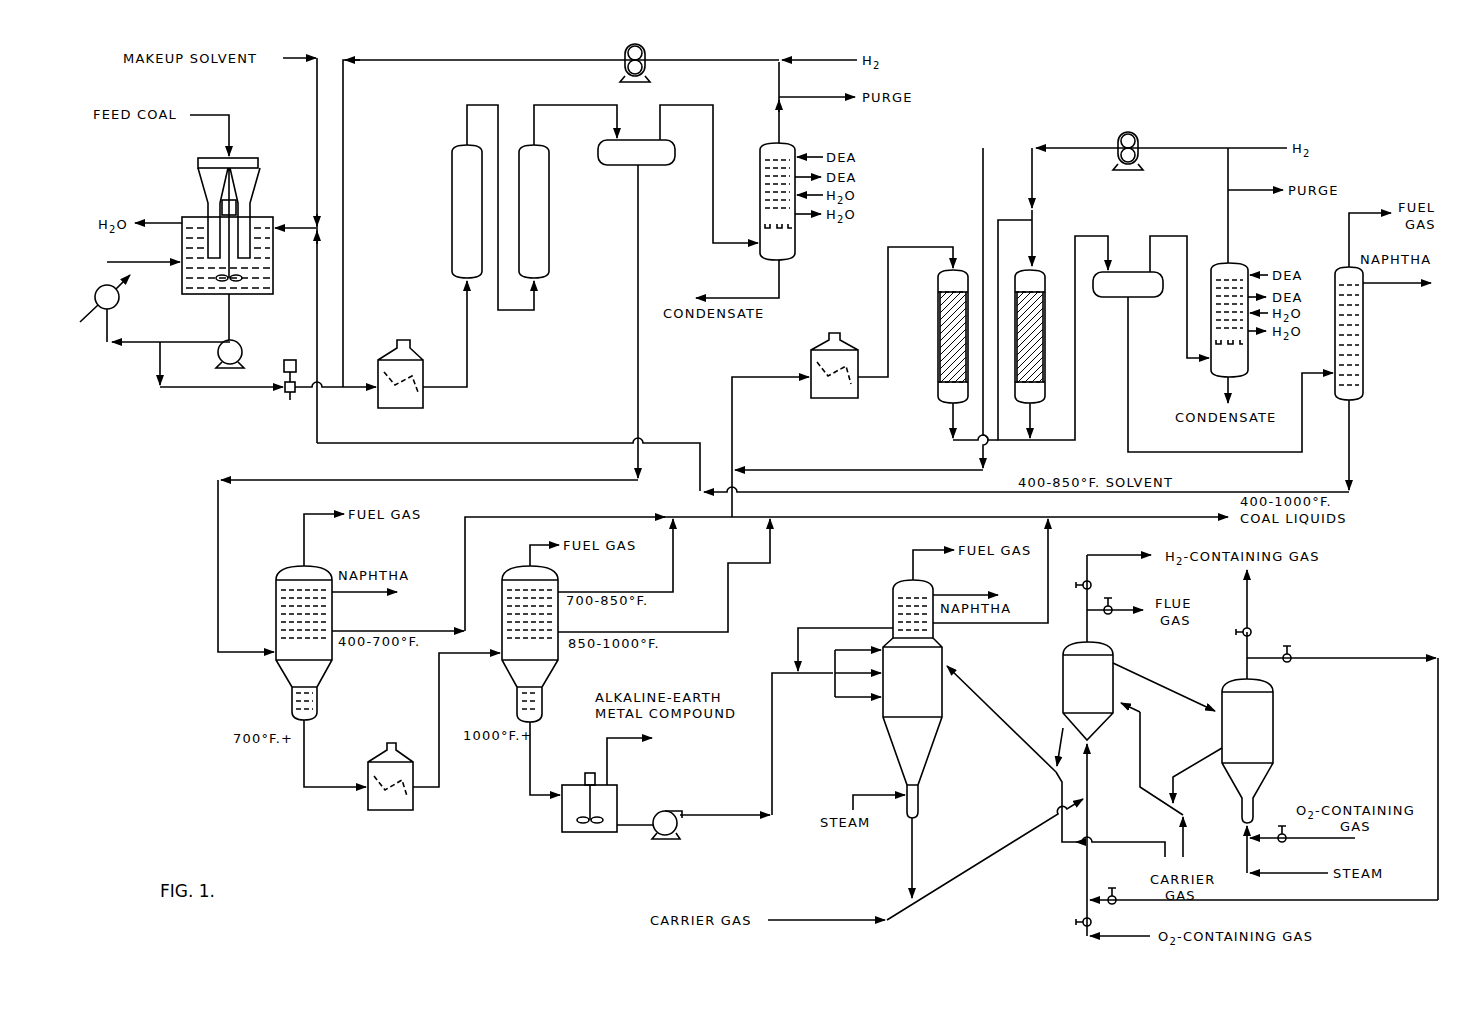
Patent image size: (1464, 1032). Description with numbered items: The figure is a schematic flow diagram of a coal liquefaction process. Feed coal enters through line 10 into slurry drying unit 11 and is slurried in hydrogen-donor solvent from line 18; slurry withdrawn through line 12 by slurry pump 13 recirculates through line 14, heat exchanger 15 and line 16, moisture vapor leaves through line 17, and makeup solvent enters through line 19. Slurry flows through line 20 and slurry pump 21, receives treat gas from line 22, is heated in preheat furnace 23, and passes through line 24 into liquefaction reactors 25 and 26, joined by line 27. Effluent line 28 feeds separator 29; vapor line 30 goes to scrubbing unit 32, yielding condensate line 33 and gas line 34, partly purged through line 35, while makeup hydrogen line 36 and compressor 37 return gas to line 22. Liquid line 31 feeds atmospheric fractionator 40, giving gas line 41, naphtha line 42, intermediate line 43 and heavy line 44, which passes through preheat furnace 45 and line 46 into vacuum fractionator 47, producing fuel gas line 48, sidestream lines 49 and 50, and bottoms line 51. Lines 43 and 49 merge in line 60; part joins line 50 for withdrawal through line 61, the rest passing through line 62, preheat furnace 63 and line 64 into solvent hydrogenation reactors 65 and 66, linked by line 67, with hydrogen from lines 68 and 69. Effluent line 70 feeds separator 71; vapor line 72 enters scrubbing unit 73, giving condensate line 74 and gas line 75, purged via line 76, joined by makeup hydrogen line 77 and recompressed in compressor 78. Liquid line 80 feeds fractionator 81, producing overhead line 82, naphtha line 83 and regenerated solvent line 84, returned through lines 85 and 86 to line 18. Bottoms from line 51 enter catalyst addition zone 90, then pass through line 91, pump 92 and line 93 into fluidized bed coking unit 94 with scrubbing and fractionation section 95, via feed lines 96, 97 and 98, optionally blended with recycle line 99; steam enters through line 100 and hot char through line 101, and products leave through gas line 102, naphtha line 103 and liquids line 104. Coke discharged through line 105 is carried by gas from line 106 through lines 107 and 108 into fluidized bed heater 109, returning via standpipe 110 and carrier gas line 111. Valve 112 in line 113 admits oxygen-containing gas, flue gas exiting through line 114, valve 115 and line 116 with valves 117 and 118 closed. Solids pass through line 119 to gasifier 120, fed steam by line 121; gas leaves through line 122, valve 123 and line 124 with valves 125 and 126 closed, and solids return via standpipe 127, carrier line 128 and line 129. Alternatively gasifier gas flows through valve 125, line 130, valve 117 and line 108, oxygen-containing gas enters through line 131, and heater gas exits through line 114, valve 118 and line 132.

The feed coal line 10 is at (229, 133).
The slurry drying unit 11 is at (256, 170).
The slurry withdrawal line 12 is at (229, 320).
The slurry pump 13 is at (236, 345).
The recycle line 14 is at (132, 345).
The heat exchanger 15 is at (119, 298).
The slurry return line 16 is at (144, 262).
The vapor withdrawal line 17 is at (162, 223).
The solvent inlet line 18 is at (304, 226).
The makeup solvent line 19 is at (314, 133).
The slurry feed line 20 is at (226, 388).
The slurry pump 21 is at (286, 400).
The treat gas line 22 is at (343, 262).
The mixed phase preheat furnace 23 is at (394, 350).
The preheated slurry line 24 is at (467, 366).
The liquefaction reactor 25 is at (460, 204).
The liquefaction reactor 26 is at (546, 205).
The interconnecting line 27 is at (488, 105).
The reactor effluent line 28 is at (578, 105).
The liquefaction reactor effluent separator 29 is at (622, 160).
The overhead vapor line 30 is at (694, 105).
The liquid line 31 is at (636, 284).
The scrubbing unit 32 is at (760, 156).
The condensate line 33 is at (768, 273).
The overhead gas line 34 is at (781, 130).
The purge line 35 is at (822, 98).
The makeup hydrogen line 36 is at (822, 62).
The compressor 37 is at (647, 56).
The atmospheric fractionator 40 is at (276, 624).
The overhead gas line 41 is at (304, 544).
The naphtha line 42 is at (370, 596).
The intermediate stream line 43 is at (414, 631).
The heavy fraction line 44 is at (306, 770).
The vacuum fractionator preheat furnace 45 is at (378, 816).
The vacuum fractionator feed line 46 is at (438, 724).
The vacuum fractionator 47 is at (510, 666).
The overhead fuel gas line 48 is at (530, 552).
The intermediate stream line 49 is at (614, 592).
The heavier sidestream line 50 is at (696, 628).
The liquefaction bottoms line 51 is at (530, 778).
The combined solvent stream line 60 is at (707, 522).
The coal liquids withdrawal line 61 is at (814, 522).
The solvent hydrogenation feed line 62 is at (728, 404).
The solvent hydrogenation preheat furnace 63 is at (810, 354).
The preheated solvent line 64 is at (888, 298).
The solvent hydrogenation reactor 65 is at (938, 332).
The solvent hydrogenation reactor 66 is at (1038, 274).
The interconnecting line 67 is at (950, 428).
The hydrogen line 68 is at (980, 187).
The second stage hydrogen line 69 is at (1034, 184).
The hydrogenated effluent line 70 is at (1075, 370).
The liquid gas separator 71 is at (1120, 296).
The vapor line 72 is at (1184, 330).
The scrubbing unit 73 is at (1222, 267).
The condensate line 74 is at (1225, 396).
The overhead gas line 75 is at (1233, 236).
The purge line 76 is at (1256, 190).
The makeup hydrogen line 77 is at (1262, 148).
The compressor 78 is at (1132, 133).
The liquid effluent line 80 is at (1128, 390).
The solvent hydrogenation fractionator 81 is at (1363, 347).
The overhead line 82 is at (1348, 234).
The naphtha line 83 is at (1398, 284).
The bottoms line 84 is at (1355, 431).
The solvent recycle line 85 is at (852, 488).
The solvent recycle line 86 is at (316, 320).
The catalyst addition zone 90 is at (587, 834).
The bottoms transfer line 91 is at (638, 826).
The pump 92 is at (668, 810).
The coker feed line 93 is at (730, 816).
The fluidized bed coking unit 94 is at (886, 730).
The scrubbing and fractionation section 95 is at (892, 607).
The feed line 96 is at (846, 647).
The feed line 97 is at (864, 676).
The feed line 98 is at (852, 698).
The heavy recycle line 99 is at (822, 624).
The fluidizing gas line 100 is at (877, 789).
The hot char return line 101 is at (998, 714).
The coker overhead gas line 102 is at (912, 562).
The naphtha side stream line 103 is at (966, 593).
The heavy liquids side stream line 104 is at (1026, 624).
The solids discharge line 105 is at (908, 870).
The carrier gas line 106 is at (828, 918).
The solids transport line 107 is at (966, 868).
The solids transport line 108 is at (1087, 790).
The fluidized bed heater 109 is at (1062, 678).
The standpipe 110 is at (1062, 732).
The carrier gas line 111 is at (1118, 842).
The valve 112 is at (1075, 922).
The oxygen-containing gas line 113 is at (1132, 936).
The heater overhead line 114 is at (1086, 636).
The valve 115 is at (1108, 614).
The flue gas line 116 is at (1132, 606).
The valve 117 is at (1116, 886).
The valve 118 is at (1091, 585).
The solids transfer line 119 is at (1166, 680).
The fluidized bed gasifier 120 is at (1272, 732).
The steam line 121 is at (1308, 876).
The gasifier overhead line 122 is at (1242, 668).
The valve 123 is at (1249, 631).
The product gas line 124 is at (1247, 598).
The valve 125 is at (1290, 664).
The valve 126 is at (1282, 842).
The standpipe 127 is at (1190, 768).
The carrier gas line 128 is at (1185, 838).
The solids return line 129 is at (1140, 730).
The hot gas line 130 is at (1436, 738).
The oxygen-containing gas line 131 is at (1340, 836).
The heater product gas line 132 is at (1116, 554).